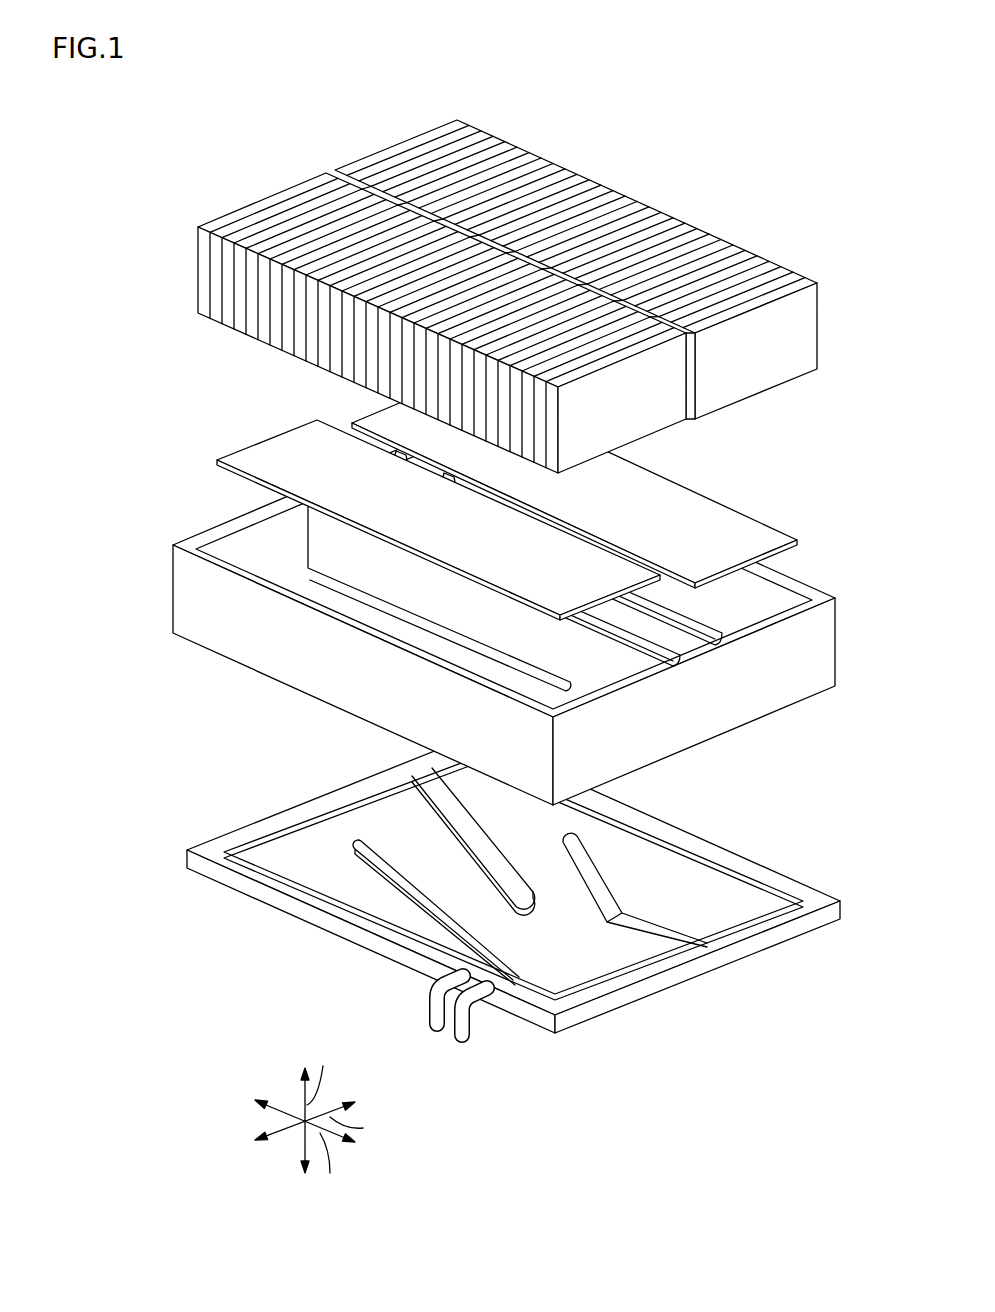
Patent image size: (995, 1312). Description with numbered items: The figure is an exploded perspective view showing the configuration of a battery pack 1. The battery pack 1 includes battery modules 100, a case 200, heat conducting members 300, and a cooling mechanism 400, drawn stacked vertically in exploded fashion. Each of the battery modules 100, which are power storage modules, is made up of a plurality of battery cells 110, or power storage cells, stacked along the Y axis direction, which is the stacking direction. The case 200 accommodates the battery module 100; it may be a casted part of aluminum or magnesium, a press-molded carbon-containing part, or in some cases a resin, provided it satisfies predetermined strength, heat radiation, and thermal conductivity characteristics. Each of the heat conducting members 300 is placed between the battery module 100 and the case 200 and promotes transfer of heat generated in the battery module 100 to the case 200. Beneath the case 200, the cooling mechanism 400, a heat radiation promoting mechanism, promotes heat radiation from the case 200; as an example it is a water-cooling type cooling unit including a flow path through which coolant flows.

The battery pack 1 is at (476, 633).
The battery module 100 is at (488, 272).
The battery cell 110 is at (227, 216).
The case 200 is at (190, 598).
The heat conducting member 300 is at (282, 448).
The cooling mechanism 400 is at (612, 973).